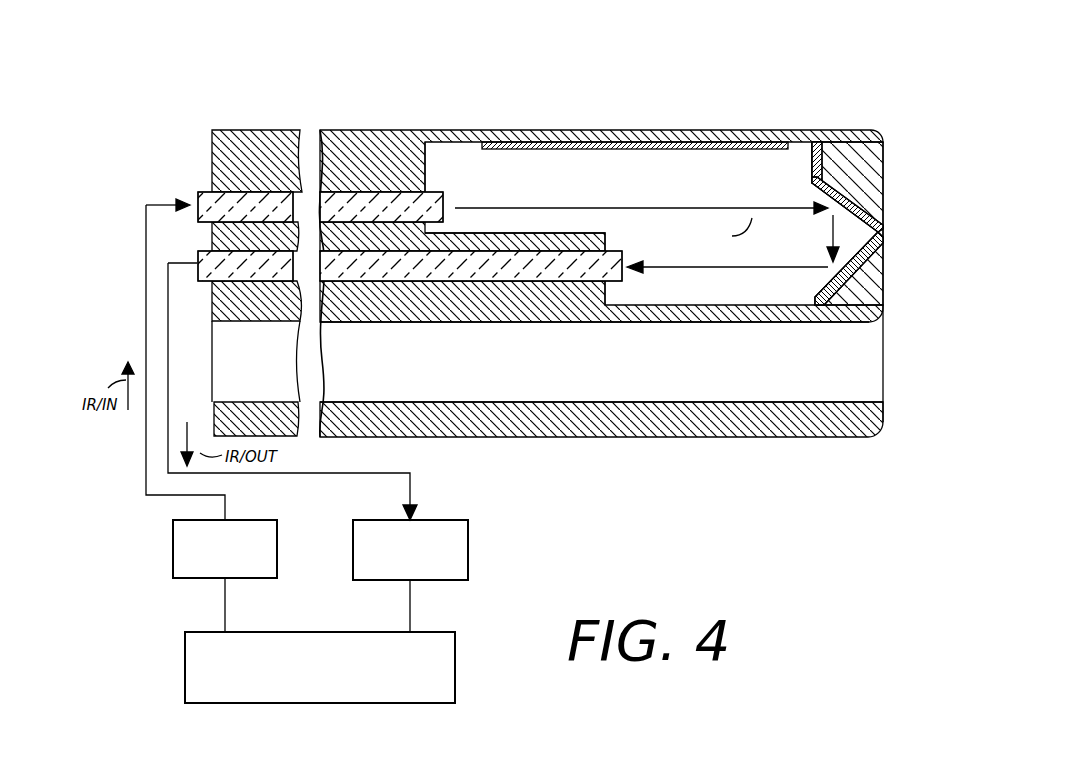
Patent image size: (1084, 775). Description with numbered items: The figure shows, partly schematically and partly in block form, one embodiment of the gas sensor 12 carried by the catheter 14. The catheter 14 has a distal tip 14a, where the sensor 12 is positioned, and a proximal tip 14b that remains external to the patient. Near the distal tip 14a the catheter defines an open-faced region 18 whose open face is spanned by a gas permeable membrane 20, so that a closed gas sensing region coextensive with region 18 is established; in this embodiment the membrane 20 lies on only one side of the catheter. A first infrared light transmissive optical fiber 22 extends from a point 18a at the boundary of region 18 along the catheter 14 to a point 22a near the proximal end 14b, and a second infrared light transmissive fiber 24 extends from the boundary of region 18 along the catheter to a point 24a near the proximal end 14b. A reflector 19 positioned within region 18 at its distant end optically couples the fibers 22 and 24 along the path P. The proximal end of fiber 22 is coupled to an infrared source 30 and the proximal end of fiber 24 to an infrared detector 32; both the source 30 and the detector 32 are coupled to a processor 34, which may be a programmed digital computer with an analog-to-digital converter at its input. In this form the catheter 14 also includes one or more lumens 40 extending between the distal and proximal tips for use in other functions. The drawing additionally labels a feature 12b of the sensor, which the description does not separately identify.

The gas sensor 12 is at (738, 73).
The return window 12b is at (622, 250).
The catheter 14 is at (357, 140).
The distal tip 14a is at (880, 102).
The proximal tip 14b is at (302, 101).
The open-faced region 18 is at (650, 185).
The point at boundary of region 18a is at (443, 193).
The reflector 19 is at (866, 212).
The gas permeable membrane 20 is at (645, 141).
The first infrared light transmissive optical fiber 22 is at (248, 130).
The point near proximal end 22a is at (192, 188).
The second infrared light transmissive fiber 24 is at (208, 192).
The point near proximal end 24a is at (197, 250).
The infrared source 30 is at (173, 545).
The infrared detector 32 is at (468, 546).
The processor 34 is at (456, 640).
The lumen 40 is at (588, 370).